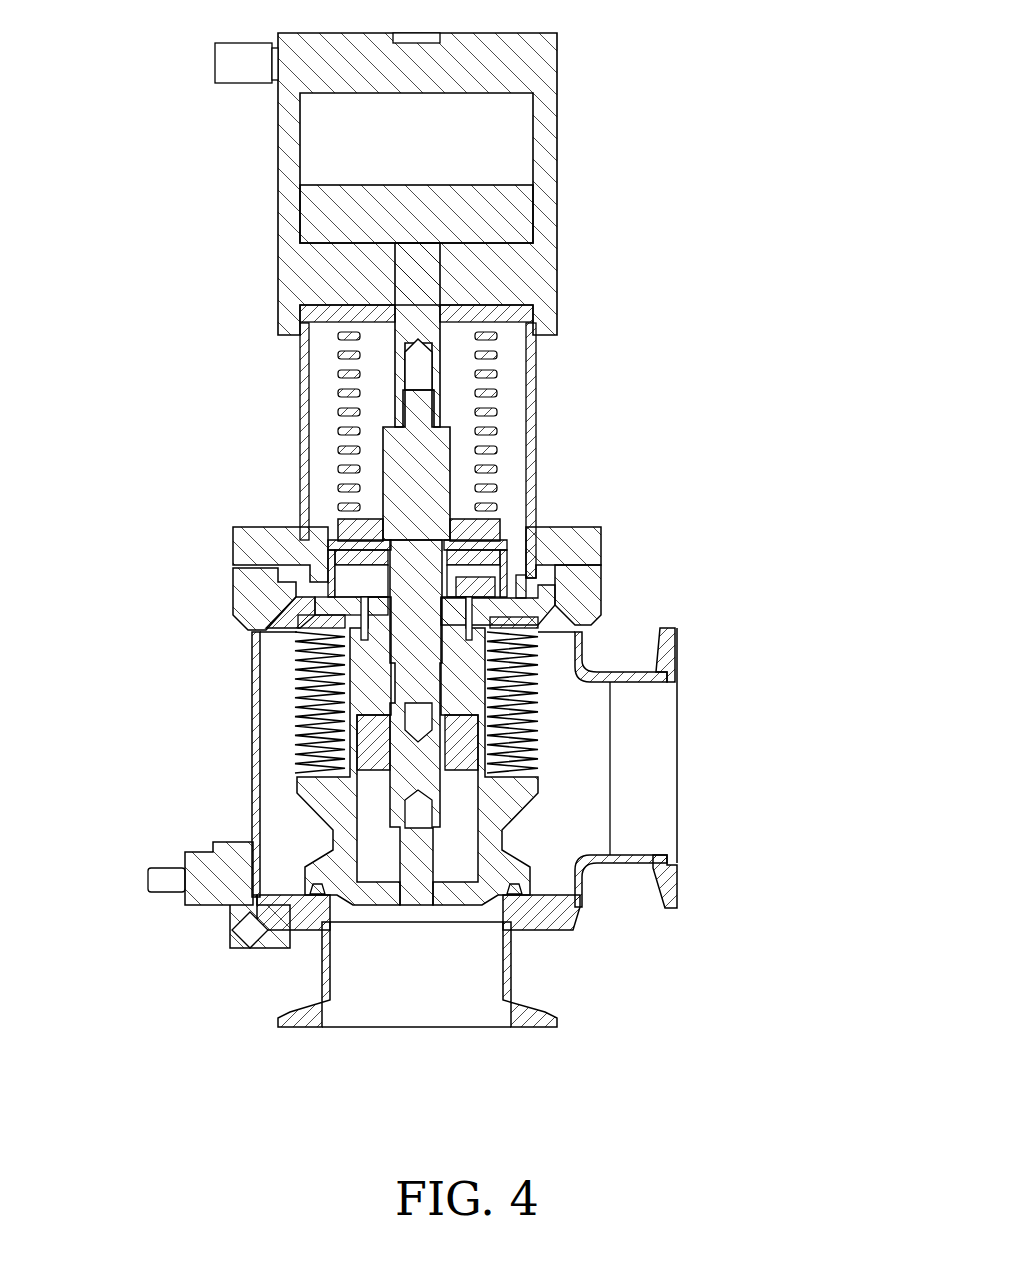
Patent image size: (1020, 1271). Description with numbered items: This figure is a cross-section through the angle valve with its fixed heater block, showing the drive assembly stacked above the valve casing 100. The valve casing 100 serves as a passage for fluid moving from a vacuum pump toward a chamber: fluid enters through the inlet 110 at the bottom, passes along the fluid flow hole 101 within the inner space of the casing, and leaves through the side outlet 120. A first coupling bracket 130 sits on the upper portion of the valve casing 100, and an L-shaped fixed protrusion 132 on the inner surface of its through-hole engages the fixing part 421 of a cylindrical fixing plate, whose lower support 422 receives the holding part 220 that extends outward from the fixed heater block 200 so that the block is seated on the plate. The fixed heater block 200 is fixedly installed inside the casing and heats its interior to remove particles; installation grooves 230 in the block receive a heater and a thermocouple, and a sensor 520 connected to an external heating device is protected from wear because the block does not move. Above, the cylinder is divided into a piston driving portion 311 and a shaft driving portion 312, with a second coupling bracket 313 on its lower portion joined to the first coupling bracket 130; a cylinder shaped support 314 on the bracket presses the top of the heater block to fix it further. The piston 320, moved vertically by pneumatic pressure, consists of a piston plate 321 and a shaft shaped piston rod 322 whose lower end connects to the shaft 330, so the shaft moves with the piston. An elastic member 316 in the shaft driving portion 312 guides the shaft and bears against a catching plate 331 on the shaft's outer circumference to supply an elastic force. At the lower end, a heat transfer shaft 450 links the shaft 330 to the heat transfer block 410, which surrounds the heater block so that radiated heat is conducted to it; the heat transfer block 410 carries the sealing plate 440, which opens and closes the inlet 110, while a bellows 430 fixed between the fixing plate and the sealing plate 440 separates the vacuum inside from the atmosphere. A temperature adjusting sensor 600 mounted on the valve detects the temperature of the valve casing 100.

The valve casing 100 is at (257, 687).
The fluid flow hole 101 is at (278, 683).
The inlet 110 is at (548, 1023).
The outlet 120 is at (673, 883).
The first coupling bracket 130 is at (593, 592).
The fixed protrusion 132 is at (284, 590).
The fixed heater block 200 is at (377, 748).
The holding part 220 is at (355, 713).
The installation grooves 230 is at (520, 595).
The piston driving portion 311 is at (543, 175).
The shaft driving portion 312 is at (532, 362).
The second coupling bracket 313 is at (593, 550).
The support 314 is at (383, 588).
The elastic member 316 is at (493, 365).
The piston 320 is at (293, 306).
The piston plate 321 is at (327, 213).
The piston rod 322 is at (412, 295).
The shaft 330 is at (400, 440).
The catching plate 331 is at (340, 533).
The heat transfer block 410 is at (480, 822).
The fixing part 421 is at (290, 578).
The support 422 is at (517, 622).
The bellows 430 is at (540, 650).
The sealing plate 440 is at (493, 843).
The heat transfer shaft 450 is at (437, 778).
The sensor 520 is at (475, 585).
The temperature adjusting sensor 600 is at (205, 893).